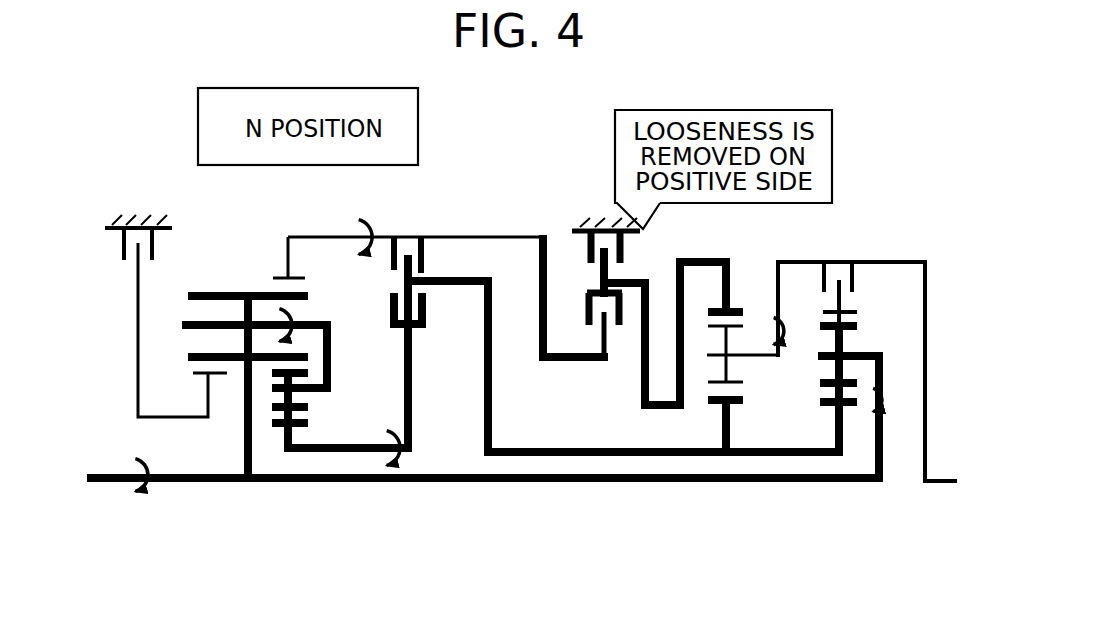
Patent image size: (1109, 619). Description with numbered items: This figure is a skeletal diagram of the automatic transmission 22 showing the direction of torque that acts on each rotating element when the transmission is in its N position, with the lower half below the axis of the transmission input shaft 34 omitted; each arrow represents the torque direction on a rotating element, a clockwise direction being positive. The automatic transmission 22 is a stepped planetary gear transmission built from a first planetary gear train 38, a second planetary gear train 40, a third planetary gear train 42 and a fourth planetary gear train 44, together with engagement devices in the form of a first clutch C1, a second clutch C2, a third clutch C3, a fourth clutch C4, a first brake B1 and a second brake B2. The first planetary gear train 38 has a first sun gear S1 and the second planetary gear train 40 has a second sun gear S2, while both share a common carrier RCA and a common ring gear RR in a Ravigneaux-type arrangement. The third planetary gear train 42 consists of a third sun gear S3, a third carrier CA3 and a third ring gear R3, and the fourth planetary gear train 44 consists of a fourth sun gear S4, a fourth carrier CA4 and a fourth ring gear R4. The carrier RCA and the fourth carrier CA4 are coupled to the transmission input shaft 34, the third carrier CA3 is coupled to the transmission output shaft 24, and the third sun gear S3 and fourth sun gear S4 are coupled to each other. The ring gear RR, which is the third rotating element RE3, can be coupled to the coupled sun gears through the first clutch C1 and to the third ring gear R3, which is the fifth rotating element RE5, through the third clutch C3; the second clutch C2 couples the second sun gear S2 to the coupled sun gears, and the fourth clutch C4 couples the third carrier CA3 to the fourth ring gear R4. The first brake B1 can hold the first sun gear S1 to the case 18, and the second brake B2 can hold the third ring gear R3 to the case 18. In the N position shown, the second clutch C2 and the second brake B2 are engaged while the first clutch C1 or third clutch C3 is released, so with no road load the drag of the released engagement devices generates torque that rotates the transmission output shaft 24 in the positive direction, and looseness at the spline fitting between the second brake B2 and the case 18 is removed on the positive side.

The case 18 is at (132, 220).
The automatic transmission 22 is at (860, 168).
The transmission output shaft 24 is at (933, 484).
The transmission input shaft 34 is at (102, 484).
The first planetary gear train 38 is at (212, 512).
The second planetary gear train 40 is at (287, 512).
The third planetary gear train 42 is at (726, 512).
The fourth planetary gear train 44 is at (838, 512).
The first brake B1 is at (123, 244).
The second brake B2 is at (584, 248).
The first clutch C1 is at (428, 249).
The second clutch C2 is at (427, 308).
The third clutch C3 is at (621, 312).
The fourth clutch C4 is at (822, 270).
The first sun gear S1 is at (206, 377).
The second sun gear S2 is at (293, 440).
The third sun gear S3 is at (720, 404).
The fourth sun gear S4 is at (832, 406).
The third ring gear R3 is at (738, 307).
The fourth ring gear R4 is at (848, 308).
The third carrier CA3 is at (745, 359).
The fourth carrier CA4 is at (880, 335).
The ring gear RR is at (281, 277).
The carrier RCA is at (333, 344).
The third rotating element RE3 is at (442, 235).
The fifth rotating element RE5 is at (638, 279).